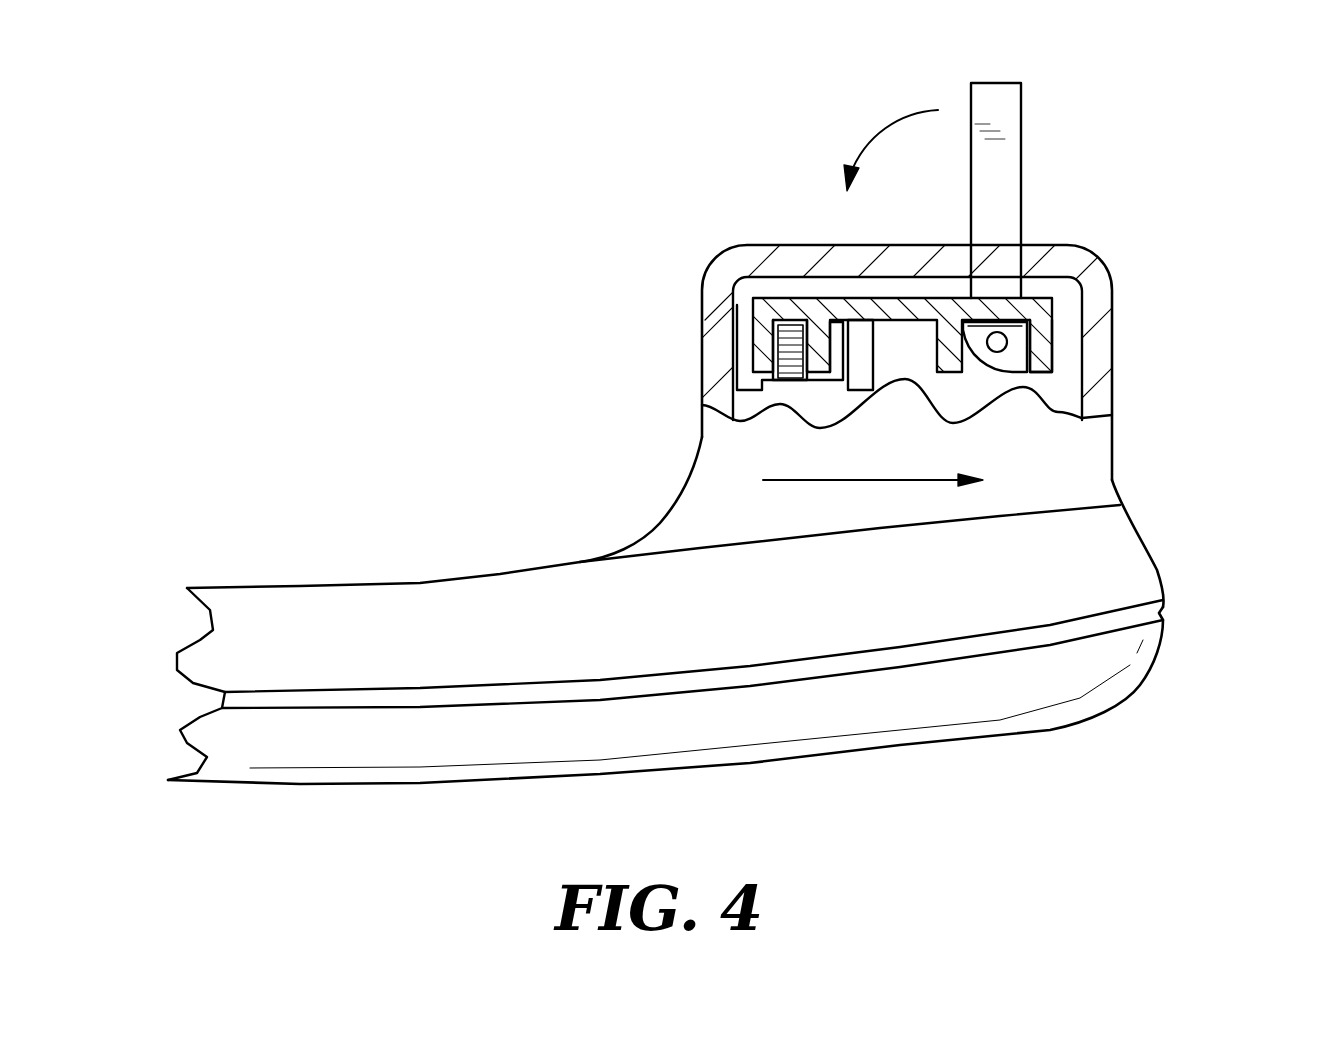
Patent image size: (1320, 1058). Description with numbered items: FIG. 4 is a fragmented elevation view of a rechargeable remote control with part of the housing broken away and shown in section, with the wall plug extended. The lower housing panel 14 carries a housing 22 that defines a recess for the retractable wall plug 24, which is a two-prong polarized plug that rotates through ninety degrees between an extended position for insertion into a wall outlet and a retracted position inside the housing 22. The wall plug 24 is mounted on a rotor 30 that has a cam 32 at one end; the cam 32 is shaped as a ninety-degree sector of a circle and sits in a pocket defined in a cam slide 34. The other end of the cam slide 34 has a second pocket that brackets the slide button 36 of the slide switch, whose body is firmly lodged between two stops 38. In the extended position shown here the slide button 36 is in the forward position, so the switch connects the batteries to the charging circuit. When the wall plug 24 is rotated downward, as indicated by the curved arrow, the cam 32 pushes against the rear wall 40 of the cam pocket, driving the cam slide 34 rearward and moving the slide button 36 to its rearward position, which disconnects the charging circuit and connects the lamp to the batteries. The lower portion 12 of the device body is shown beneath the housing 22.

The handle body 12 is at (950, 703).
The lower housing panel 14 is at (1023, 583).
The housing 22 is at (1112, 335).
The wall plug 24 is at (1017, 107).
The rotor 30 is at (1005, 342).
The cam 32 is at (1010, 372).
The cam slide 34 is at (845, 308).
The slide button 36 is at (790, 378).
The stops 38 is at (743, 375).
The rear wall 40 is at (1047, 350).